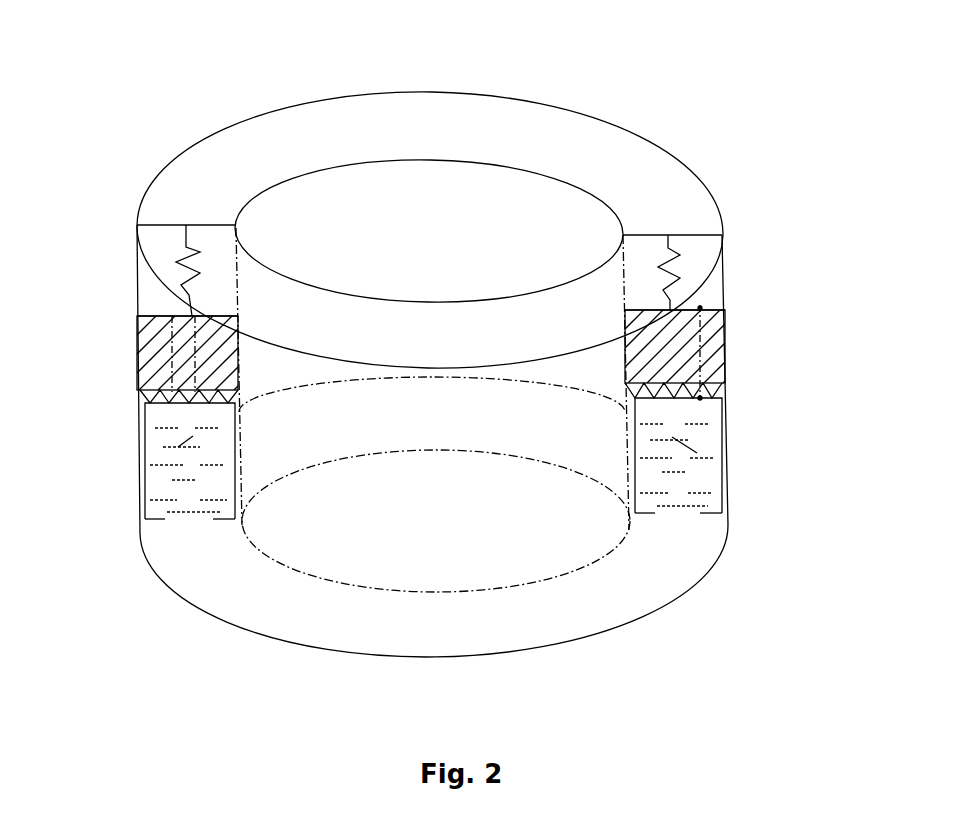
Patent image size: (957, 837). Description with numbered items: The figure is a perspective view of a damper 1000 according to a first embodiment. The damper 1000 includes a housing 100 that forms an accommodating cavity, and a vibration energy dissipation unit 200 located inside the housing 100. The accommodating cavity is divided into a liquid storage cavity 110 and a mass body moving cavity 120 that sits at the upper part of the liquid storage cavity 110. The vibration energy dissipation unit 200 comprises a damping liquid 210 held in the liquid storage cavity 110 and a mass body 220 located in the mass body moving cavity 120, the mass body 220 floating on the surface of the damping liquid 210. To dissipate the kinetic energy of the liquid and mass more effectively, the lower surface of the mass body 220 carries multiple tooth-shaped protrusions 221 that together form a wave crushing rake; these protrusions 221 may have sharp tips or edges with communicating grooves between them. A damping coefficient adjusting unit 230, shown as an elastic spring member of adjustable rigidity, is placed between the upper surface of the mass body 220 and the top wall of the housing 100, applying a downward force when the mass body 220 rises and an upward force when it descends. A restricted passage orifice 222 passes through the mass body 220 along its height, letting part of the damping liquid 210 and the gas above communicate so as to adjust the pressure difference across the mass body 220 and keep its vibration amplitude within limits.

The damper 1000 is at (460, 333).
The housing 100 is at (378, 372).
The liquid storage cavity 110 is at (160, 533).
The mass body moving cavity 120 is at (148, 298).
The vibration energy dissipation unit 200 is at (460, 372).
The damping liquid 210 is at (487, 458).
The mass body 220 is at (424, 352).
The tooth-shaped protrusions 221 is at (143, 399).
The restricted passage orifice 222 is at (143, 373).
The damping coefficient adjusting unit 230 is at (700, 268).